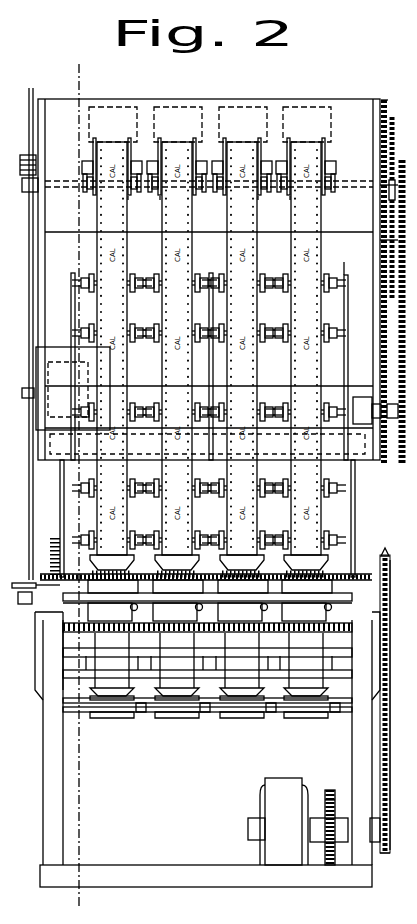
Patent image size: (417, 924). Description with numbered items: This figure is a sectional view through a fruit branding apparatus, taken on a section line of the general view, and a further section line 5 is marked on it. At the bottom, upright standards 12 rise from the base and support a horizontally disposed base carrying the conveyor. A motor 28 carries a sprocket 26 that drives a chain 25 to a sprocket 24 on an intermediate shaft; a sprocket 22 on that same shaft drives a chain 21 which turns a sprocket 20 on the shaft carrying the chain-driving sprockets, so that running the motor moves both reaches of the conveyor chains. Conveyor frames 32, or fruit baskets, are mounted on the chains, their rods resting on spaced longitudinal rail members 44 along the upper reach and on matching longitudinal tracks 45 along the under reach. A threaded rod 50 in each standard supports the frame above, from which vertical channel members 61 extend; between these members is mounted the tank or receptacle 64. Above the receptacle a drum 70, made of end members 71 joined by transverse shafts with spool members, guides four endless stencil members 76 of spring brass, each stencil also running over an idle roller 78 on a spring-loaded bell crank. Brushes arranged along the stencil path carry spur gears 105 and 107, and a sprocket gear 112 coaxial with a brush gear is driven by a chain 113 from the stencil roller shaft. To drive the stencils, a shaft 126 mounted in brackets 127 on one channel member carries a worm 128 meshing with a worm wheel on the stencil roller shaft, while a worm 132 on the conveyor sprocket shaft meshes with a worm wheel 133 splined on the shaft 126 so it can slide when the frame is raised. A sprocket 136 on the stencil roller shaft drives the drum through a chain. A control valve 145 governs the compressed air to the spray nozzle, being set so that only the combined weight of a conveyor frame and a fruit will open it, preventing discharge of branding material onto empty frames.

The section line 5- 5 is at (78, 64).
The standards 12 is at (46, 738).
The sprocket 20 is at (386, 552).
The chain 21 is at (388, 768).
The sprocket 22 is at (387, 864).
The sprocket 24 is at (332, 790).
The chain 25 is at (326, 805).
The sprocket 26 is at (322, 829).
The motor 28 is at (276, 778).
The conveyor frames 32 is at (160, 703).
The longitudinal rail members 44 is at (148, 587).
The longitudinal tracks 45 is at (135, 706).
The rod 50 is at (52, 488).
The vertical channel members 61 is at (42, 314).
The tank or receptacle 64 is at (349, 110).
The drum 70 is at (345, 277).
The end members 71 is at (72, 297).
The stencil member 76 is at (104, 157).
The idle roller 78 is at (160, 196).
The spur gear 105 is at (375, 274).
The spur gear 107 is at (386, 98).
The sprocket gear 112 is at (393, 118).
The chain 113 is at (397, 150).
The shaft 126 is at (29, 290).
The brackets 127 is at (27, 192).
The worm 128 is at (22, 162).
The worm 132 is at (20, 570).
The worm wheel 133 is at (19, 604).
The sprocket 136 is at (403, 166).
The control valve 145 is at (128, 607).